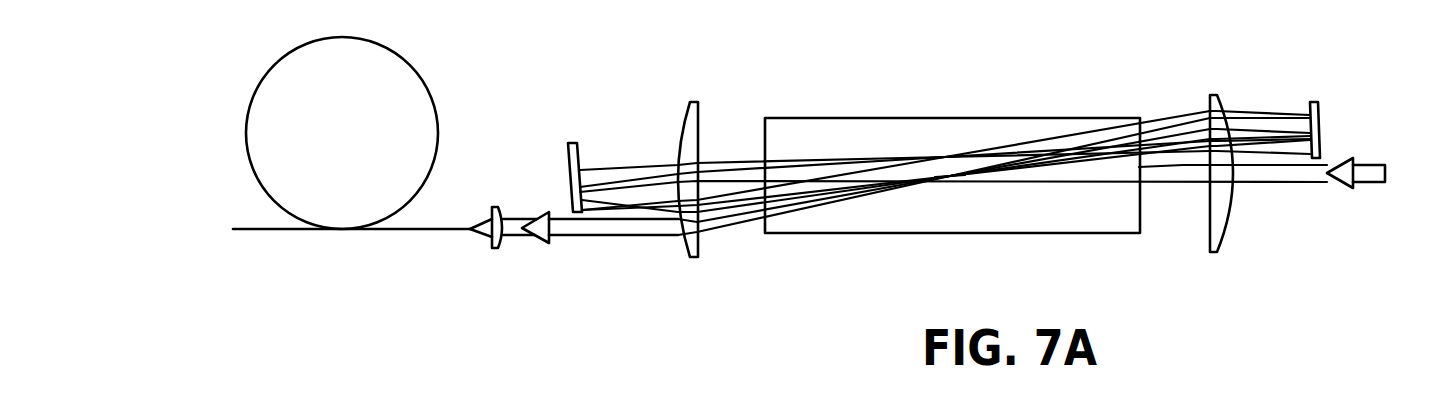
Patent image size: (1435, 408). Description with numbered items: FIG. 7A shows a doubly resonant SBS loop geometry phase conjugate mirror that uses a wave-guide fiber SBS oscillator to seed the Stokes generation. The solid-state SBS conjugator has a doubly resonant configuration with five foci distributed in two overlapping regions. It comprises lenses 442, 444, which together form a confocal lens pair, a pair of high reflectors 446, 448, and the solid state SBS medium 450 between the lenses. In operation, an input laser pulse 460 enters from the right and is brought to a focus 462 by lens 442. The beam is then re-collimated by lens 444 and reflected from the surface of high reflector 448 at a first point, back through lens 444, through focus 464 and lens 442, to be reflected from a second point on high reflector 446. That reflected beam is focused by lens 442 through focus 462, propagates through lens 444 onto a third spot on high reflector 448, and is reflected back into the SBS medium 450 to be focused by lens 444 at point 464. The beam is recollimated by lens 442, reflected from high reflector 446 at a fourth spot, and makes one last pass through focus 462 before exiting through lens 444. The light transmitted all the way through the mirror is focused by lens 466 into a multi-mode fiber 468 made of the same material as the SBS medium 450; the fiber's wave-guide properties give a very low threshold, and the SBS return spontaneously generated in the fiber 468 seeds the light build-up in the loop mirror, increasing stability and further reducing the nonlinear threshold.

The lens 442 is at (1259, 173).
The lens 444 is at (655, 202).
The high reflector 446 is at (1346, 100).
The high reflector 448 is at (602, 148).
The solid state SBS medium 450 is at (952, 153).
The input laser pulse 460 is at (1359, 147).
The focus 462 is at (973, 224).
The focus 464 is at (926, 115).
The lens 466 is at (488, 180).
The multi-mode fiber 468 is at (351, 166).